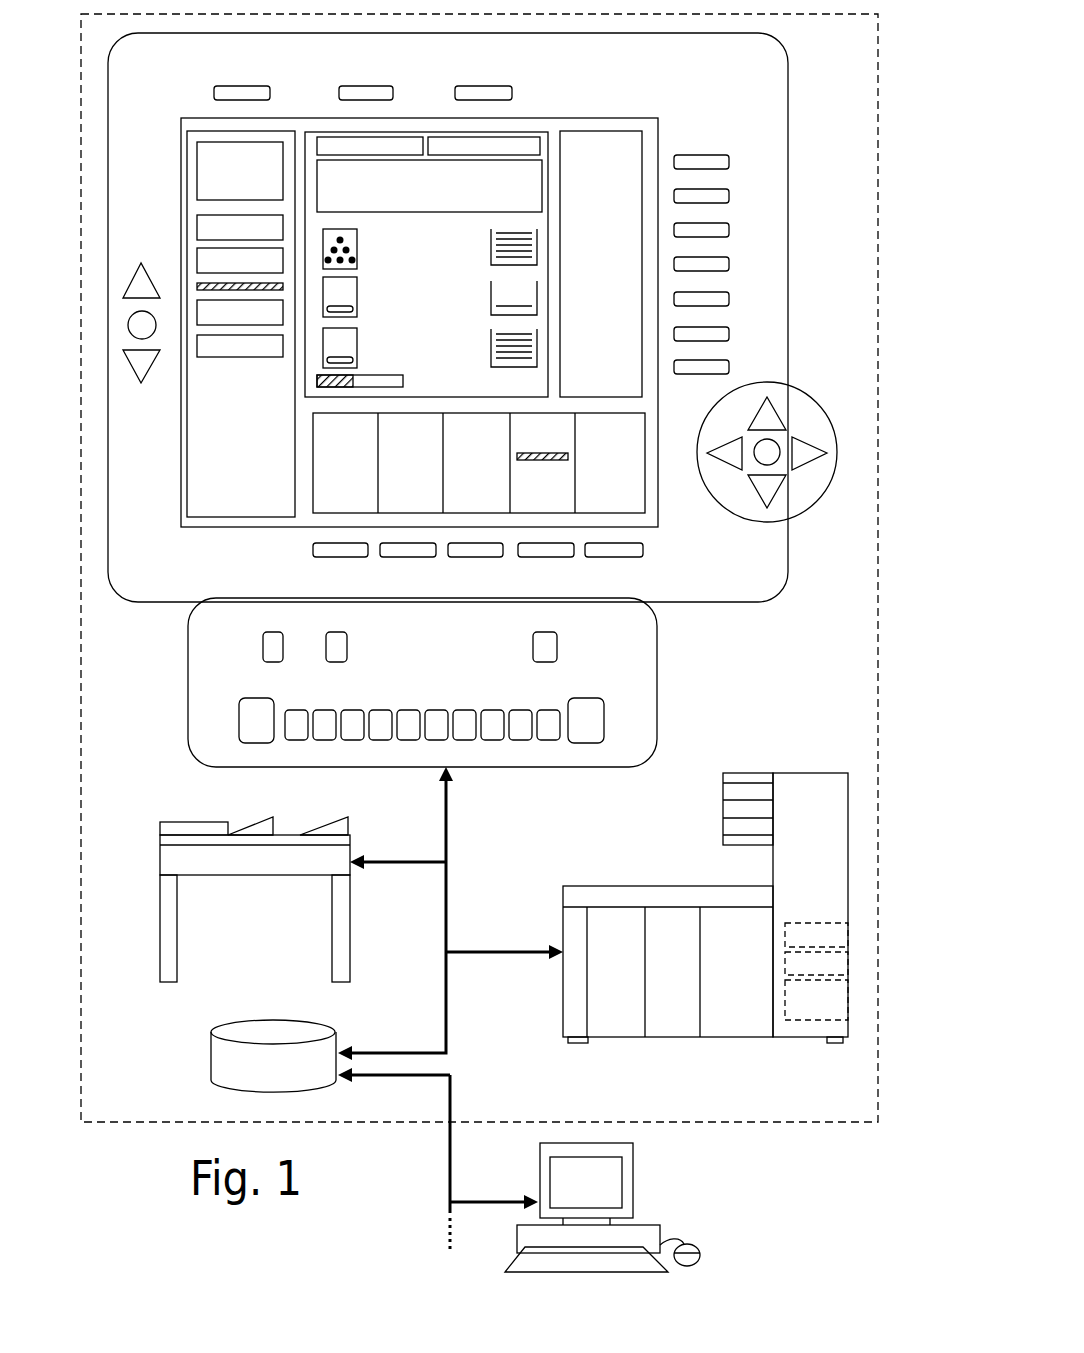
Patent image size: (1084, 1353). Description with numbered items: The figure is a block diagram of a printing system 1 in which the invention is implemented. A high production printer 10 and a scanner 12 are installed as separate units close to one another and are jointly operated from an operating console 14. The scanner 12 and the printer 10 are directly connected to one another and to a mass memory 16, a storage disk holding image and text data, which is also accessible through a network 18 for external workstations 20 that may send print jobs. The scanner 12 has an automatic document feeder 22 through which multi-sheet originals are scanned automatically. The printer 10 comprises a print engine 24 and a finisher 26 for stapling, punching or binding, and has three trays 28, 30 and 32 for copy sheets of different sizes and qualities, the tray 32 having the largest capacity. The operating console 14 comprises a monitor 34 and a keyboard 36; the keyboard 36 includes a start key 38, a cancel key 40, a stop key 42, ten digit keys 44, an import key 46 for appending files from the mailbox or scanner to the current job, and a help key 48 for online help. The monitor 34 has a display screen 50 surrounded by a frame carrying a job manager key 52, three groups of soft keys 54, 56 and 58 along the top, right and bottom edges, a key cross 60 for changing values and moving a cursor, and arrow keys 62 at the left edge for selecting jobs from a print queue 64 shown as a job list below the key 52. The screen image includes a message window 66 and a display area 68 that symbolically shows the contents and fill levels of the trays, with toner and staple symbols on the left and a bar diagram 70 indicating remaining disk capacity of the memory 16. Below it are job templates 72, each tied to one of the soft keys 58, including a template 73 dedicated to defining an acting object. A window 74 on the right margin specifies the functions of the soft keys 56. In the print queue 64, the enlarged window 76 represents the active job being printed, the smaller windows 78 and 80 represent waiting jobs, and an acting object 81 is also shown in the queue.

The printing system 1 is at (906, 640).
The high production printer 10 is at (751, 747).
The scanner 12 is at (136, 834).
The operating console 14 is at (782, 630).
The mass memory 16 is at (218, 1027).
The network 18 is at (450, 1182).
The workstation 20 is at (650, 1223).
The automatic document feeder 22 is at (207, 822).
The print engine 24 is at (660, 1005).
The finisher 26 is at (805, 790).
The first tray 28 is at (842, 935).
The second tray 30 is at (837, 962).
The third tray 32 is at (837, 995).
The monitor 34 is at (788, 165).
The keyboard 36 is at (657, 672).
The start key 38 is at (247, 725).
The cancel key 40 is at (593, 725).
The stop key 42 is at (557, 648).
The digit keys 44 is at (401, 684).
The import key 46 is at (263, 645).
The help key 48 is at (347, 646).
The display screen 50 is at (560, 118).
The job manager key 52 is at (228, 86).
The soft keys 54 is at (478, 86).
The soft keys 56 is at (699, 143).
The soft keys 58 is at (665, 548).
The key cross 60 is at (798, 422).
The arrow keys 62 is at (150, 407).
The print queue 64 is at (215, 128).
The message window 66 is at (426, 264).
The display area 68 is at (377, 277).
The bar diagram 70 is at (403, 381).
The job templates 72 is at (479, 501).
The acting object command template 73 is at (532, 485).
The window 74 is at (601, 264).
The window 76 is at (203, 173).
The window 78 is at (207, 260).
The window 80 is at (205, 230).
The acting object 81 is at (203, 287).